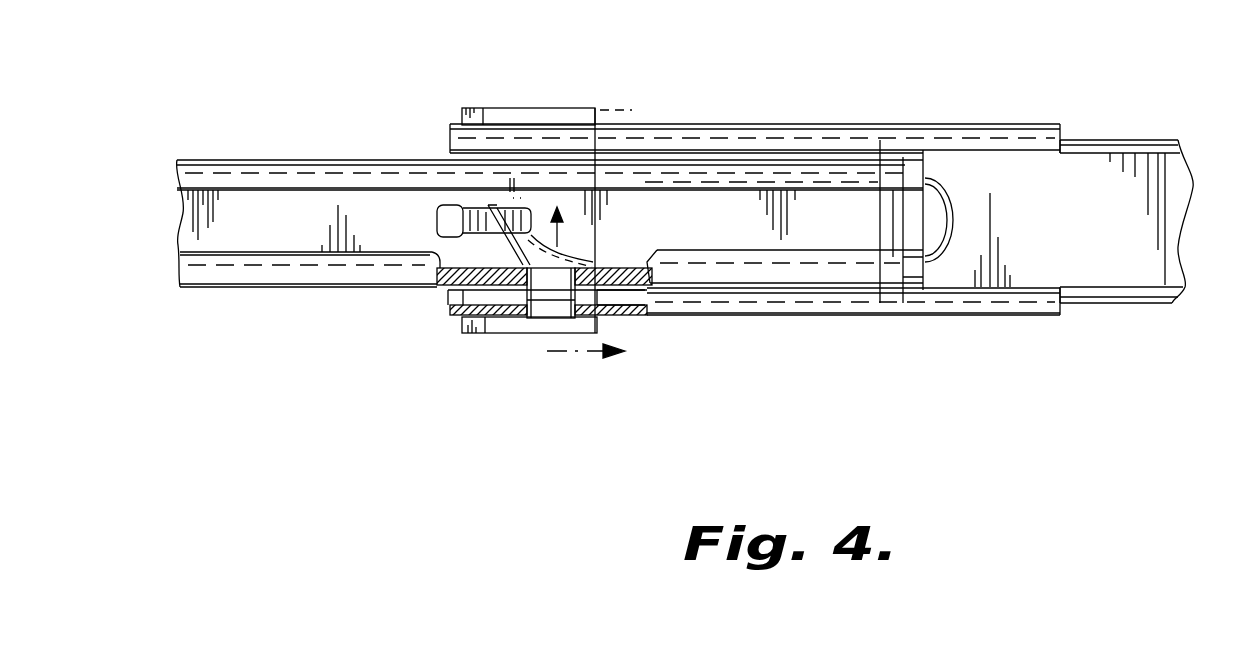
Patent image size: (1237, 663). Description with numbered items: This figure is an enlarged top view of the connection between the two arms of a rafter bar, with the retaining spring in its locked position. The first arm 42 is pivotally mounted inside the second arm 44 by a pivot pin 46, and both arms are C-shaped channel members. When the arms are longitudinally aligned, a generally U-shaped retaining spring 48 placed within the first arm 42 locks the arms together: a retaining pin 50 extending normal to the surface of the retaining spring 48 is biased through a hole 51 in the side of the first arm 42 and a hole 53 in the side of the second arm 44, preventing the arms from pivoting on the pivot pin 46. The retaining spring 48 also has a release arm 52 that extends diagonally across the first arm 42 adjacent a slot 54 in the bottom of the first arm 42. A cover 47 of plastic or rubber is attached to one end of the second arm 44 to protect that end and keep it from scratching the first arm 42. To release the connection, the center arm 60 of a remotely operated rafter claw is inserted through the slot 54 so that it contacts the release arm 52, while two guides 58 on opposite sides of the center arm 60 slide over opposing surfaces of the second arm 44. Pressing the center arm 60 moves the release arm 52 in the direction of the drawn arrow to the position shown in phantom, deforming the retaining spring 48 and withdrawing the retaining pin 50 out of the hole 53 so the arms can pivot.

The first arm 42 is at (203, 287).
The second arm 44 is at (1167, 303).
The pivot pin 46 is at (893, 140).
The cover 47 is at (768, 123).
The retaining spring 48 is at (943, 253).
The retaining pin 50 is at (550, 310).
The hole 51 is at (657, 313).
The release arm 52 is at (437, 283).
The hole 53 is at (607, 307).
The slot 54 is at (435, 221).
The guides 58 is at (533, 113).
The center arm 60 is at (467, 205).